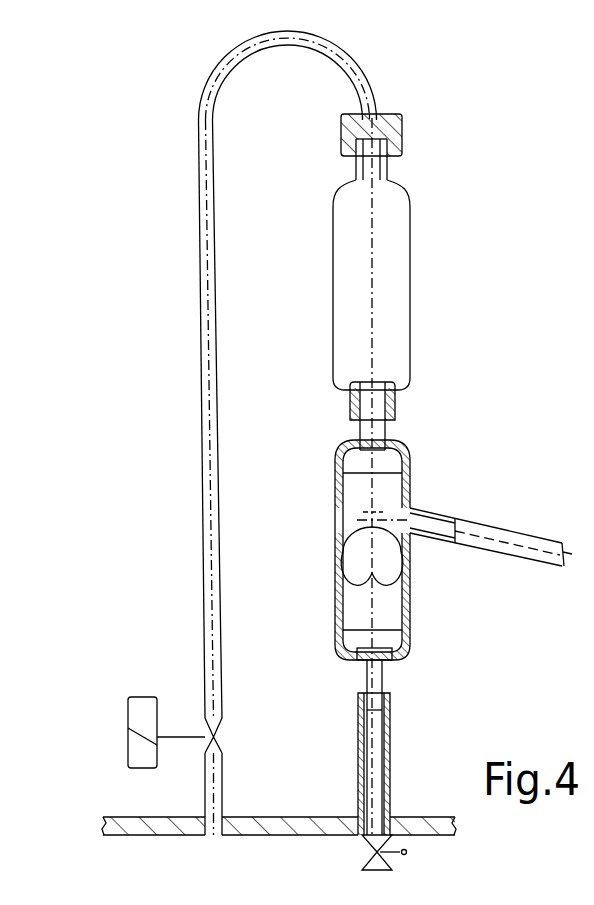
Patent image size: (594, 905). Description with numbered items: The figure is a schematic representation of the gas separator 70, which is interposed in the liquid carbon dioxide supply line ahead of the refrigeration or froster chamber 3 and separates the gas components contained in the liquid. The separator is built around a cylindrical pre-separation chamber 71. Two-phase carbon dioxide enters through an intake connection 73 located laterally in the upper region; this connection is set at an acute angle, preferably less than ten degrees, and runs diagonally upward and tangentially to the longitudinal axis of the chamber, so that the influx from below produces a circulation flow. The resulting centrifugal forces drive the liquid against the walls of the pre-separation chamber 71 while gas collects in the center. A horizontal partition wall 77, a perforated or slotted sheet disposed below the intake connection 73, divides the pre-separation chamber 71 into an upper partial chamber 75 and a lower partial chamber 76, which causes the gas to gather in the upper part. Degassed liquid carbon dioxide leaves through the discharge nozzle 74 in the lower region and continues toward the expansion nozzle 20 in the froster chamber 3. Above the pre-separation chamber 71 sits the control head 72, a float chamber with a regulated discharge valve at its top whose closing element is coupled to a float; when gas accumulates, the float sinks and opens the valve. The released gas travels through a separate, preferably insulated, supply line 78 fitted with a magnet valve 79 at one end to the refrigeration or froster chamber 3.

The refrigeration or froster chamber 3 is at (275, 835).
The expansion nozzle 20 is at (385, 868).
The gas separator 70 is at (478, 308).
The pre-separation chamber 71 is at (398, 609).
The control head 72 is at (398, 235).
The intake connection 73 is at (425, 512).
The discharge nozzle 74 is at (375, 675).
The upper partial chamber 75 is at (352, 482).
The lower partial chamber 76 is at (355, 613).
The partition wall 77 is at (357, 548).
The separate supply line 78 is at (208, 76).
The magnet valve 79 is at (143, 718).